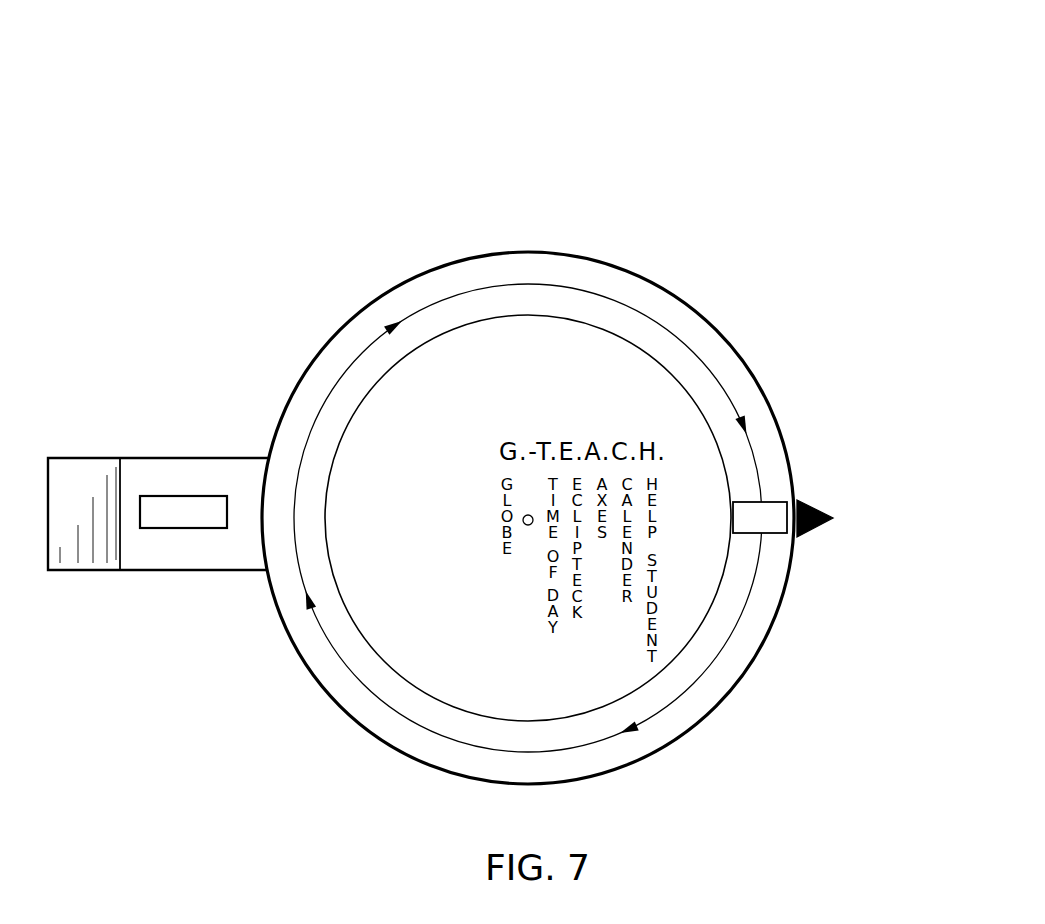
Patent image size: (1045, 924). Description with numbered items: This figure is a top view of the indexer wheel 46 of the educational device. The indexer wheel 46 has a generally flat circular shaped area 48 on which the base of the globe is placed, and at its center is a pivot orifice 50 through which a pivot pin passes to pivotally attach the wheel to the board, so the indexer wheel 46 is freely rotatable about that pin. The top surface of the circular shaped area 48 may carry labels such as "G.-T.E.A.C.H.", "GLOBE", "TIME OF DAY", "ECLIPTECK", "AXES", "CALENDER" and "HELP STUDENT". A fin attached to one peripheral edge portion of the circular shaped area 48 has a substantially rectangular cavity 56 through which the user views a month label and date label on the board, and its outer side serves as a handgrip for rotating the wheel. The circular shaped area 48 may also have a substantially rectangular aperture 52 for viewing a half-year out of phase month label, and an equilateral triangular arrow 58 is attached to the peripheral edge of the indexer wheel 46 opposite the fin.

The indexer wheel 46 is at (645, 162).
The generally flat circular shaped area 48 is at (628, 387).
The pivot orifice 50 is at (528, 527).
The substantially rectangular aperture 52 is at (182, 565).
The substantially rectangular cavity 56 is at (168, 505).
The arrow 58 is at (817, 528).